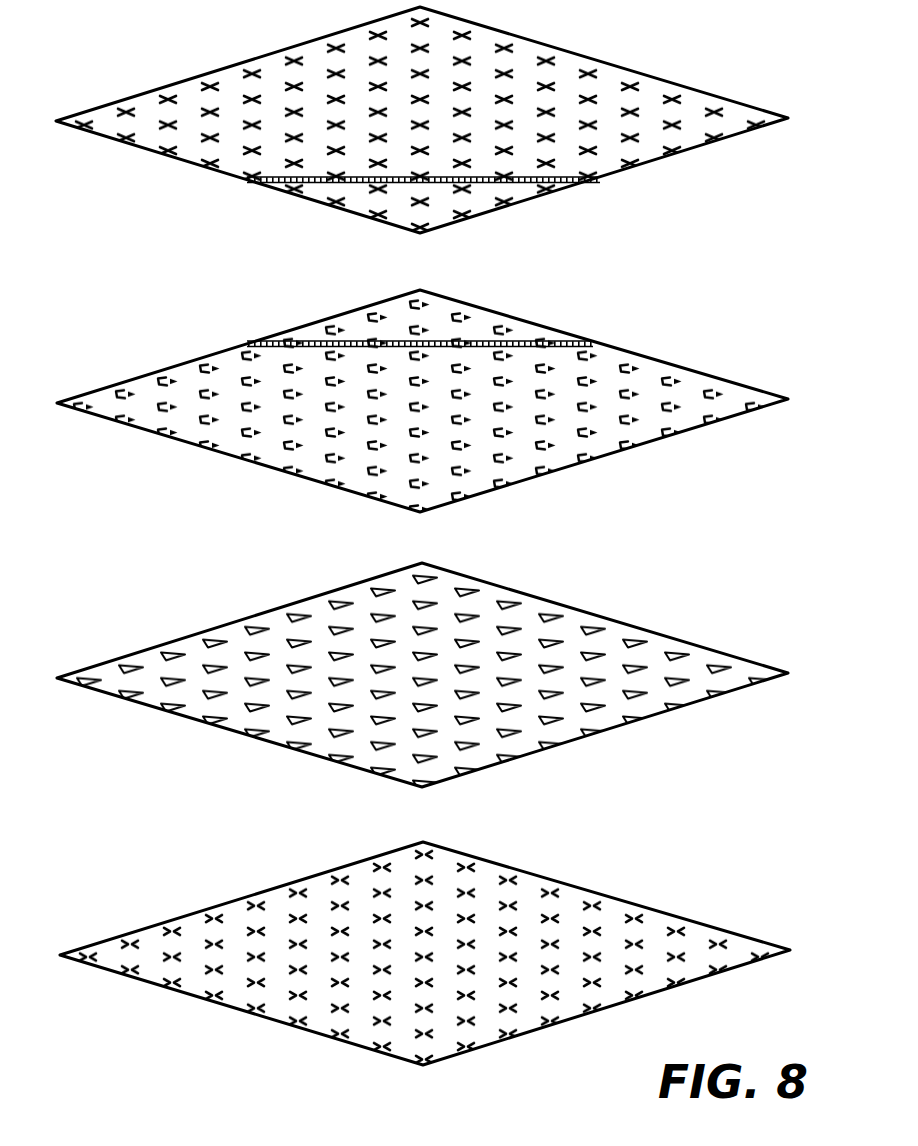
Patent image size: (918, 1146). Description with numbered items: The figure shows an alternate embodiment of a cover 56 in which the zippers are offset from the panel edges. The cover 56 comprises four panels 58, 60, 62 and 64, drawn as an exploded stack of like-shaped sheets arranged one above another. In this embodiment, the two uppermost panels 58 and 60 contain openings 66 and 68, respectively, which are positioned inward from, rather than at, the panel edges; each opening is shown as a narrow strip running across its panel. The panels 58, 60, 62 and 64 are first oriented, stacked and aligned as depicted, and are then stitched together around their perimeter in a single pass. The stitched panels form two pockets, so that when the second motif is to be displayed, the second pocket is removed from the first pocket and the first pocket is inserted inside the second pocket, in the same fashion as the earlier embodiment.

The cover 56 is at (404, 536).
The panel 58 is at (422, 127).
The panel 60 is at (422, 400).
The panel 62 is at (608, 667).
The panel 64 is at (610, 943).
The opening 66 is at (523, 183).
The opening 68 is at (523, 341).